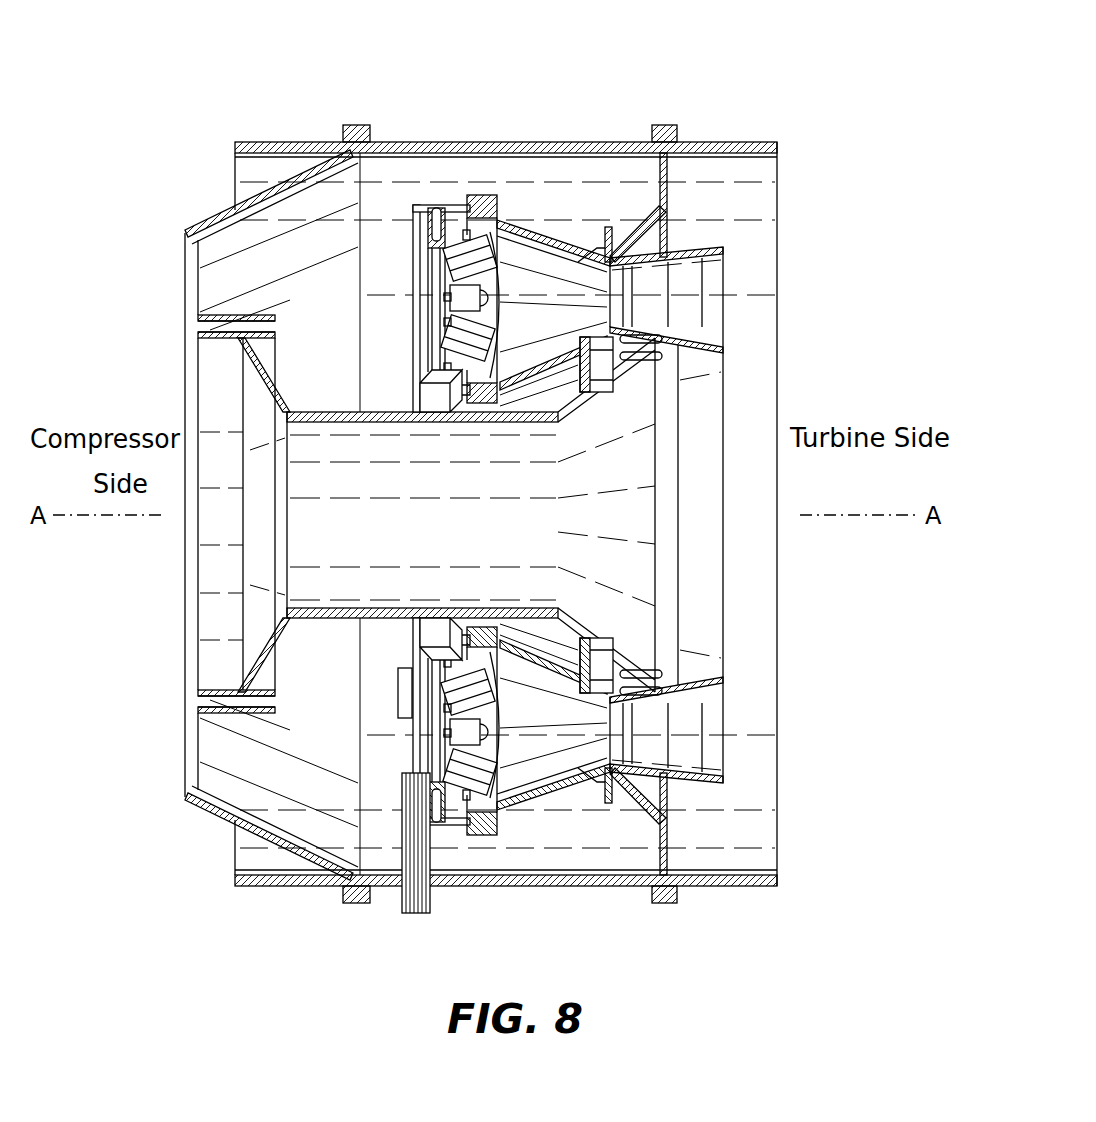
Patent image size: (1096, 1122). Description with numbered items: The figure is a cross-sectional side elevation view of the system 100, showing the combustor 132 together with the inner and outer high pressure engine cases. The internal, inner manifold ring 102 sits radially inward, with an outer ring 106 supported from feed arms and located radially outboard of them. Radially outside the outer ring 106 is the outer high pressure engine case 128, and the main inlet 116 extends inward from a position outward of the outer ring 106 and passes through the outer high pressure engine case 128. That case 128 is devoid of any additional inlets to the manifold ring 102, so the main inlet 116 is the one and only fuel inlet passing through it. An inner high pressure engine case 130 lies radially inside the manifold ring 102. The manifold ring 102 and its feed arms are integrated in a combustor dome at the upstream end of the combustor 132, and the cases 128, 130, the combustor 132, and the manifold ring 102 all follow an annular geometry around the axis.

The system 100 is at (483, 478).
The manifold ring 102 is at (457, 628).
The outer ring 106 is at (437, 710).
The main inlet 116 is at (432, 898).
The outer high pressure engine case 128 is at (512, 143).
The inner high pressure engine case 130 is at (363, 422).
The combustor 132 is at (577, 312).